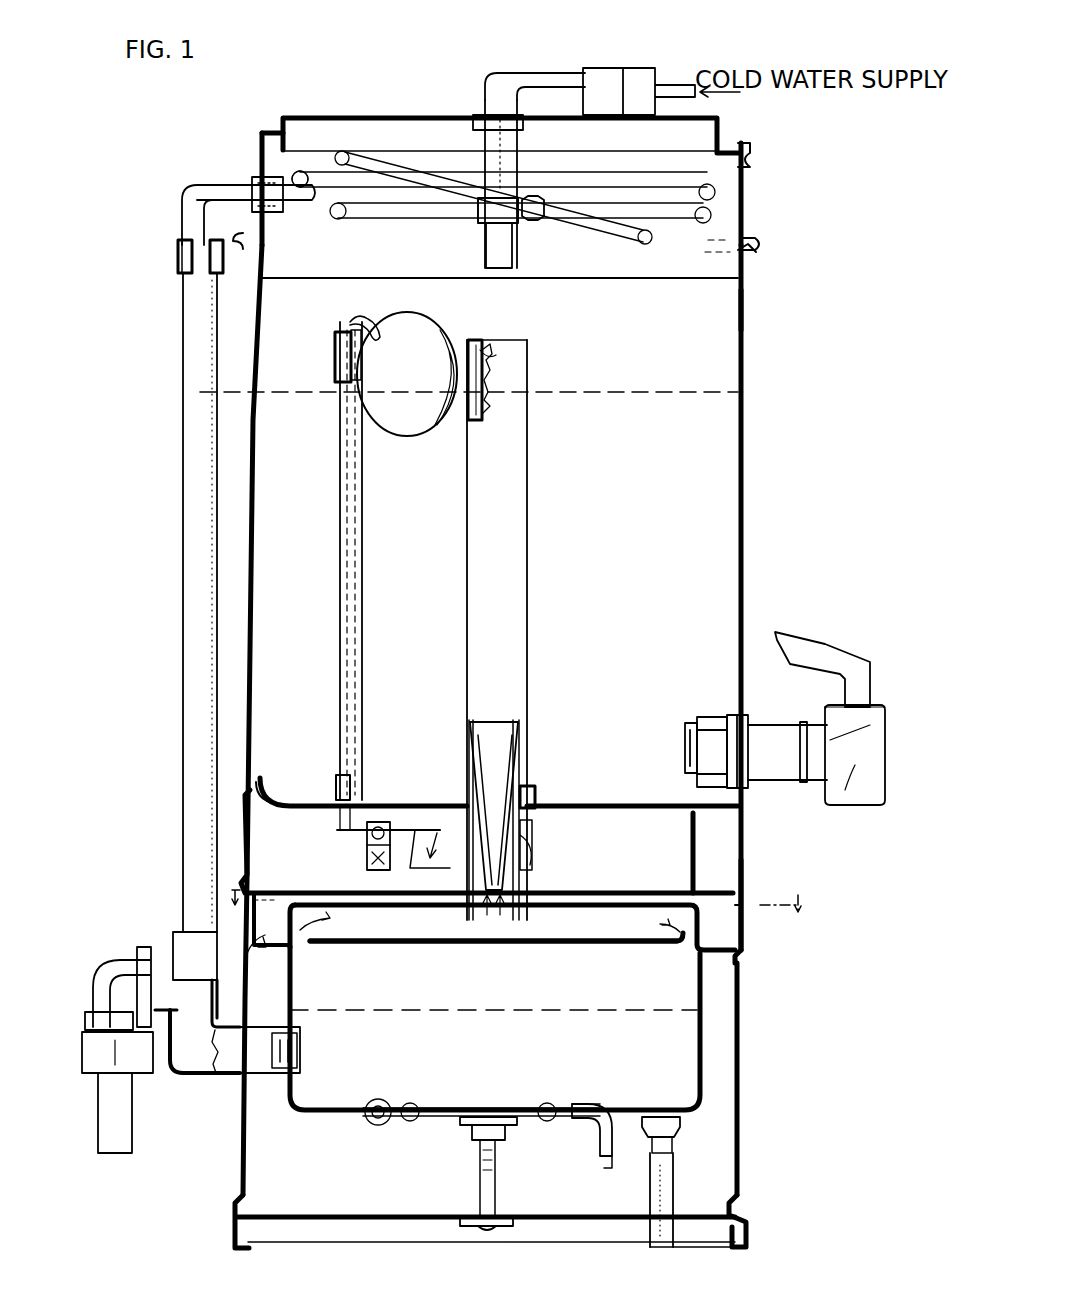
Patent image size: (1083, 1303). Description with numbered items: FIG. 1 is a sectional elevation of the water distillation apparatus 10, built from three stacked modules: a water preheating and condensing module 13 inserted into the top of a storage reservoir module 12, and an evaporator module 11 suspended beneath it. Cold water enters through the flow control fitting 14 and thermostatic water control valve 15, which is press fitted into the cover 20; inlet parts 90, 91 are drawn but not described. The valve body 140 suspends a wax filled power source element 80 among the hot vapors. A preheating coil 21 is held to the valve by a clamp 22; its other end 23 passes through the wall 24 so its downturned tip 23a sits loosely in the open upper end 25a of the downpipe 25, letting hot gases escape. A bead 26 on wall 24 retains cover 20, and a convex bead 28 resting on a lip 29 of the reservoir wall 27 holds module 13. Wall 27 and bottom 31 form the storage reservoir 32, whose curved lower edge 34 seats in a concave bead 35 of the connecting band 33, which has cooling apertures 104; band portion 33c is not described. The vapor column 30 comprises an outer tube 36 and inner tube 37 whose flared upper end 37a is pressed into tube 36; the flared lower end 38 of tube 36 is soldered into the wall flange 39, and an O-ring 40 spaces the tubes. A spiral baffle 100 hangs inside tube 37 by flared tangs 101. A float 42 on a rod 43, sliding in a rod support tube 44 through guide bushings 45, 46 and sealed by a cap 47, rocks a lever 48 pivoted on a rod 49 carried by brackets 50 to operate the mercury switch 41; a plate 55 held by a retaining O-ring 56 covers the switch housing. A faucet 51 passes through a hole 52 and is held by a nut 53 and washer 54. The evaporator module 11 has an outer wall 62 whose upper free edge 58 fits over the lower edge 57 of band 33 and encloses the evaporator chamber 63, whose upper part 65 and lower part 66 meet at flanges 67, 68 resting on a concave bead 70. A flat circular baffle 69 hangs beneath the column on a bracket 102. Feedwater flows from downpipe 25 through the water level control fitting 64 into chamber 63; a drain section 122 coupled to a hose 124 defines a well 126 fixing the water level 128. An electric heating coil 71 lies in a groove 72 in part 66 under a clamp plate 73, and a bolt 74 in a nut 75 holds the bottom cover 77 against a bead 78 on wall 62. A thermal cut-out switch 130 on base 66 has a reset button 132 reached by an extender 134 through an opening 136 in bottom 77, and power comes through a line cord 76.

The water distillation apparatus 10 is at (768, 392).
The evaporator module 11 is at (742, 983).
The storage reservoir module 12 is at (757, 356).
The water preheating and condensing module 13 is at (748, 190).
The flow control fitting 14 is at (569, 66).
The water control valve 15 is at (532, 143).
The cover 20 is at (390, 120).
The preheating coil 21 is at (612, 228).
The clamp 22 is at (520, 222).
The coil end 23 is at (298, 200).
The downwardly turned tip 23a is at (190, 232).
The wall 24 is at (255, 172).
The downpipe 25 is at (183, 390).
The open upper end of downpipe 25a is at (178, 253).
The annular inwardly formed bead 26 is at (752, 163).
The wall 27 is at (747, 312).
The annular convex bead 28 is at (752, 236).
The lip 29 is at (752, 252).
The vapor column 30 is at (538, 486).
The bottom 31 is at (605, 812).
The storage reservoir 32 is at (499, 745).
The connecting band 33 is at (745, 834).
The wall portion 33c is at (747, 893).
The curved lower peripheral edge 34 is at (262, 795).
The concave annular bead 35 is at (250, 805).
The outer tube 36 is at (470, 724).
The inner tube 37 is at (518, 740).
The flared upper end 37a is at (476, 345).
The flared lower end 38 is at (532, 832).
The wall flange 39 is at (538, 786).
The O-ring 40 is at (527, 848).
The float activated mercury switch 41 is at (435, 825).
The float 42 is at (425, 322).
The rod 43 is at (368, 318).
The rod support tube 44 is at (364, 480).
The guide bushing 45 is at (335, 345).
The guide bushing 46 is at (336, 788).
The sealing cap 47 is at (345, 340).
The lever 48 is at (337, 830).
The rod 49 is at (367, 845).
The brackets 50 is at (380, 822).
The faucet 51 is at (819, 636).
The hole 52 is at (733, 712).
The nut 53 is at (685, 737).
The washer 54 is at (712, 715).
The plate 55 is at (578, 894).
The retaining O-ring 56 is at (466, 908).
The lower edge 57 is at (272, 919).
The upper free edge 58 is at (745, 925).
The outer wall 62 is at (742, 1022).
The evaporator chamber 63 is at (715, 1073).
The water level control fitting 64 is at (178, 940).
The upper part 65 is at (636, 902).
The lower part 66 is at (700, 1110).
The horizontal flange 67 is at (706, 950).
The horizontal flange 68 is at (707, 950).
The flat circular baffle 69 is at (390, 944).
The concave annular bead 70 is at (742, 960).
The electric heating coil 71 is at (382, 1100).
The groove 72 is at (574, 1102).
The clamp plate 73 is at (575, 1120).
The bolt 74 is at (496, 1175).
The nut 75 is at (470, 1135).
The line cord 76 is at (609, 1150).
The bottom cover 77 is at (610, 1223).
The bead 78 is at (745, 1195).
The power source element 80 is at (486, 258).
The inlet valve 90 is at (640, 72).
The inlet elbow 91 is at (535, 80).
The spiral baffle 100 is at (490, 370).
The laterally flared tangs 101 is at (488, 350).
The bracket 102 is at (470, 944).
The cooling apertures 104 is at (250, 830).
The drain feed fitting section 122 is at (118, 965).
The hose 124 is at (130, 1125).
The well 126 is at (183, 1075).
The level 128 is at (395, 1008).
The thermal cut-out switch 130 is at (680, 1128).
The reset button 132 is at (672, 1147).
The extender 134 is at (650, 1193).
The opening 136 is at (672, 1235).
The valve body 140 is at (478, 223).